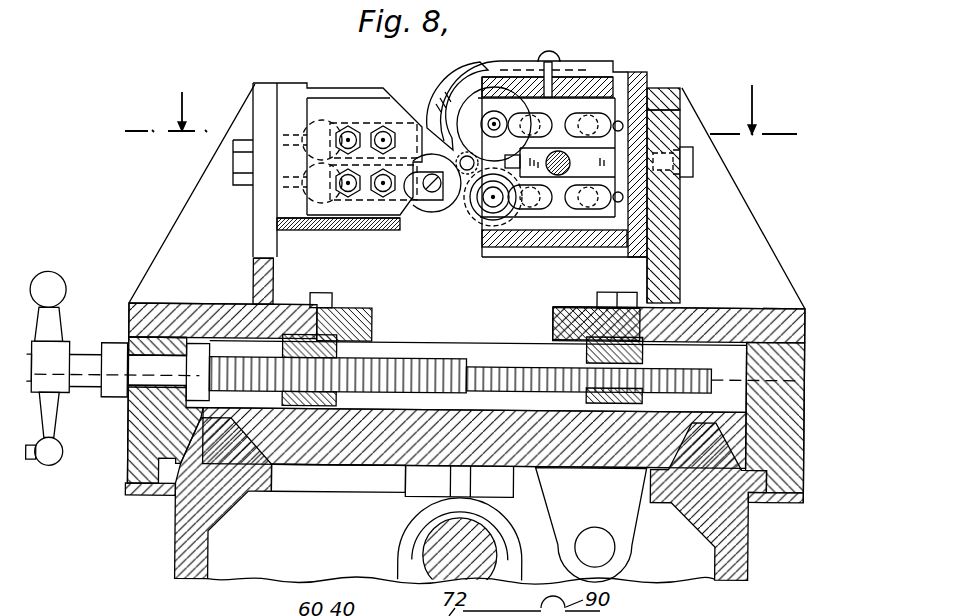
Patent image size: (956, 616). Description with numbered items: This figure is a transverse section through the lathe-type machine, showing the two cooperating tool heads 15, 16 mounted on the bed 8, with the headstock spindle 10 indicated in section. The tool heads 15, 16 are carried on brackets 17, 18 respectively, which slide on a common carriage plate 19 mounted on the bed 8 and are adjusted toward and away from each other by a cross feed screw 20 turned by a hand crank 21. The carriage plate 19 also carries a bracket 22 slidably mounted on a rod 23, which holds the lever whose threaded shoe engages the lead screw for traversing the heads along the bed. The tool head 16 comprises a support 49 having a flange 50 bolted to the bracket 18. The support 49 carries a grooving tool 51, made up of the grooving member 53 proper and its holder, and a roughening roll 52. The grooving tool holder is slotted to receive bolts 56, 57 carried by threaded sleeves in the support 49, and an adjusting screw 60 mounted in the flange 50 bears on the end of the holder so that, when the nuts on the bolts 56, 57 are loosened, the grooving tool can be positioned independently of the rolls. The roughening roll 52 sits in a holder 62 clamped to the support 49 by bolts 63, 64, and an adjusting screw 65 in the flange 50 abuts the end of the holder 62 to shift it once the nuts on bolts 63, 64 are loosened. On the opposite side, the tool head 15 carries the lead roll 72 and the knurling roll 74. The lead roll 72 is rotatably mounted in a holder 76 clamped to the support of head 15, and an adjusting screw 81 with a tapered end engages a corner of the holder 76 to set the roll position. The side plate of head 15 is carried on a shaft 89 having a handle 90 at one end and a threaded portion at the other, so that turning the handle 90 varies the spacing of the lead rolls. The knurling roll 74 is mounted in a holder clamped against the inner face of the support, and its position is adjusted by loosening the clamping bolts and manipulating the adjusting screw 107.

The bed 8 is at (464, 500).
The headstock spindle 10 is at (461, 110).
The tool head 15 is at (648, 70).
The tool head 16 is at (416, 374).
The bracket 17 is at (670, 232).
The bracket 18 is at (467, 293).
The carriage plate 19 is at (338, 478).
The cross feed screw 20 is at (460, 376).
The hand crank 21 is at (48, 368).
The bracket 22 is at (591, 525).
The rod 23 is at (595, 547).
The support 49 is at (341, 98).
The flange 50 is at (292, 83).
The grooving tool 51 is at (452, 147).
The roughening roll 52 is at (427, 197).
The grooving member 53 is at (430, 118).
The bolt 56 is at (395, 118).
The bolt 57 is at (349, 138).
The adjusting screw 60 is at (305, 112).
The holder 62 is at (425, 203).
The bolt 63 is at (348, 186).
The bolt 64 is at (383, 186).
The adjusting screw 65 is at (305, 198).
The lead roll 72 is at (483, 93).
The knurling roll 74 is at (478, 212).
The holder 76 is at (606, 102).
The adjusting screw 81 is at (668, 90).
The shaft 89 is at (571, 163).
The handle 90 is at (549, 74).
The adjusting screw 107 is at (642, 203).